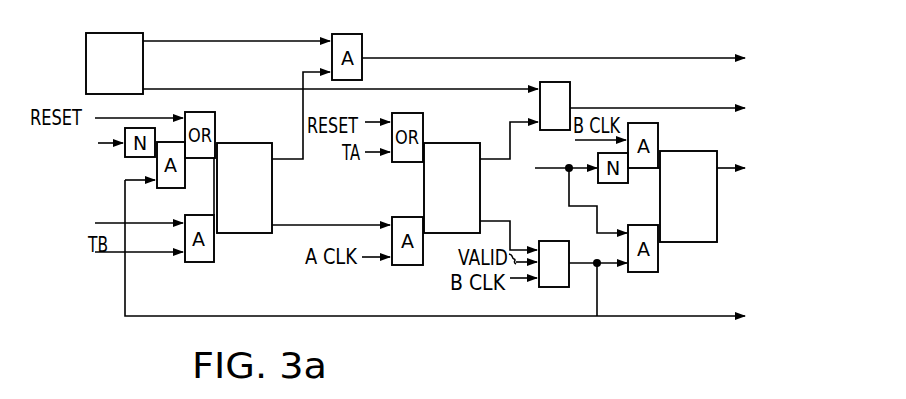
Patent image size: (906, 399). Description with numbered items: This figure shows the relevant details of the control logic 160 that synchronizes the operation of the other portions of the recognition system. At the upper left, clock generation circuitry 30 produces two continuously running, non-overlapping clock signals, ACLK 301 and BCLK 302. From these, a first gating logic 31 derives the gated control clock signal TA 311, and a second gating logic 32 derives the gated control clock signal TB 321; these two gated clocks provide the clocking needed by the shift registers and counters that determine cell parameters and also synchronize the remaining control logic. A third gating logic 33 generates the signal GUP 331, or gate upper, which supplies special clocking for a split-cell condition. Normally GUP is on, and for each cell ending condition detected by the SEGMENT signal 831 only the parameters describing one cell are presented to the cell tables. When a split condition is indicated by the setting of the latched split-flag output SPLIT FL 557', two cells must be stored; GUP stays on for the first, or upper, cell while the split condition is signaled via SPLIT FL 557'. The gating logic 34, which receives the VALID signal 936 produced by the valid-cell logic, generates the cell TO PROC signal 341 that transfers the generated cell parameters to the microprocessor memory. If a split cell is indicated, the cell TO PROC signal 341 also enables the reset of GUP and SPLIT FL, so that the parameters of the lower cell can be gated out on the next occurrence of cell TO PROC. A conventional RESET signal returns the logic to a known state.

The clock generation circuitry 30 is at (109, 34).
The clock signal ACLK 301 is at (281, 34).
The clock signal BCLK 302 is at (263, 86).
The control logic 160 is at (525, 50).
The gated control clock signal TA 311 is at (695, 59).
The gated control clock signal TB 321 is at (695, 109).
The gating logic 31 is at (298, 187).
The gating logic 32 is at (482, 198).
The gating logic 33 is at (675, 132).
The signal GUP 331 is at (719, 168).
The latched split-flag output 557' is at (313, 161).
The SEGMENT signal 831 is at (173, 224).
The VALID signal 936 is at (511, 251).
The gating logic 34 is at (565, 243).
The cell TO PROC signal 341 is at (722, 306).